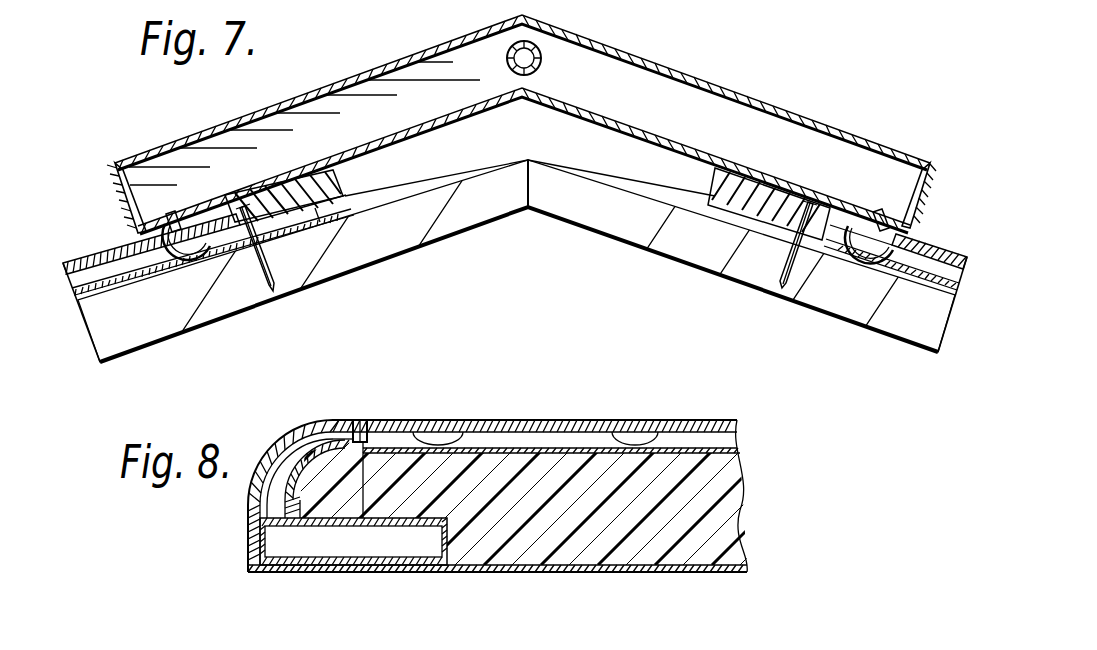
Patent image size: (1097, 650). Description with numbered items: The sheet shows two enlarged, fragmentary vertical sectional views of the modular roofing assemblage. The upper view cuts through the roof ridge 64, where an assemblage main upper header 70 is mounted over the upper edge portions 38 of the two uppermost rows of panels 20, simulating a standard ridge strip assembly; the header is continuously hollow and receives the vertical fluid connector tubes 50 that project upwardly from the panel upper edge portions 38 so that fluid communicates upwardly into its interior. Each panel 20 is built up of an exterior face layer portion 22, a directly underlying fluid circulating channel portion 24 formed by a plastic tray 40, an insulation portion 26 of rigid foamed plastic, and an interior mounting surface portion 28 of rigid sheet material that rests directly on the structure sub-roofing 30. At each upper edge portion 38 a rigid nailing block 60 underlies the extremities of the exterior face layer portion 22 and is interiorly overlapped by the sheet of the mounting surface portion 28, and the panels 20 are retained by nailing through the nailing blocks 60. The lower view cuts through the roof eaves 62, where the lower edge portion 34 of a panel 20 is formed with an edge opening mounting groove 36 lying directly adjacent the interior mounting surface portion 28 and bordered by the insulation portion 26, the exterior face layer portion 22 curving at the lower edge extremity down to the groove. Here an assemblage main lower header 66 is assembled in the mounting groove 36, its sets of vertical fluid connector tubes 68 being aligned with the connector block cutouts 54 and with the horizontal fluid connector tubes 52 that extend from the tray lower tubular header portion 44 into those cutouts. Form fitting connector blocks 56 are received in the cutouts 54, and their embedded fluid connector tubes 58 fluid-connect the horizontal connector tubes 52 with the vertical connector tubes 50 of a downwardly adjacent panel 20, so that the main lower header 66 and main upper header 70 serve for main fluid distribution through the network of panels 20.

In FIG. 7, the modular panel 20 is at (125, 236).
In FIG. 8, the modular panel 20 is at (590, 412).
In FIG. 7, the exterior face layer portion 22 is at (90, 268).
In FIG. 8, the exterior face layer portion 22 is at (518, 420).
In FIG. 7, the fluid circulating channel portion 24 is at (68, 262).
In FIG. 8, the fluid circulating channel portion 24 is at (742, 438).
In FIG. 7, the insulation portion 26 is at (140, 312).
In FIG. 8, the insulation portion 26 is at (727, 507).
In FIG. 7, the interior mounting surface portion 28 is at (95, 354).
In FIG. 8, the interior mounting surface portion 28 is at (747, 575).
In FIG. 7, the structure sub-roofing 30 is at (663, 245).
In FIG. 8, the lower edge portion 34 is at (252, 485).
In FIG. 8, the edge opening mounting groove 36 is at (440, 538).
In FIG. 7, the upper edge portion 38 is at (345, 200).
In FIG. 7, the plastic tray 40 is at (66, 296).
In FIG. 8, the plastic tray 40 is at (743, 452).
In FIG. 8, the lower tubular header portion 44 is at (440, 432).
In FIG. 7, the vertical fluid connector tube 50 is at (176, 212).
In FIG. 7, the horizontal fluid connector tube 52 is at (188, 250).
In FIG. 8, the horizontal fluid connector tube 52 is at (363, 420).
In FIG. 8, the connector block cutout 54 is at (317, 421).
In FIG. 8, the connector block 56 is at (298, 440).
In FIG. 8, the fluid connector tube 58 is at (280, 442).
In FIG. 7, the nailing block 60 is at (283, 262).
In FIG. 8, the roof eaves 62 is at (330, 582).
In FIG. 7, the roof ridge 64 is at (398, 52).
In FIG. 8, the assemblage main lower header 66 is at (303, 547).
In FIG. 8, the vertical fluid connector tube 68 is at (282, 505).
In FIG. 7, the assemblage main upper header 70 is at (630, 74).